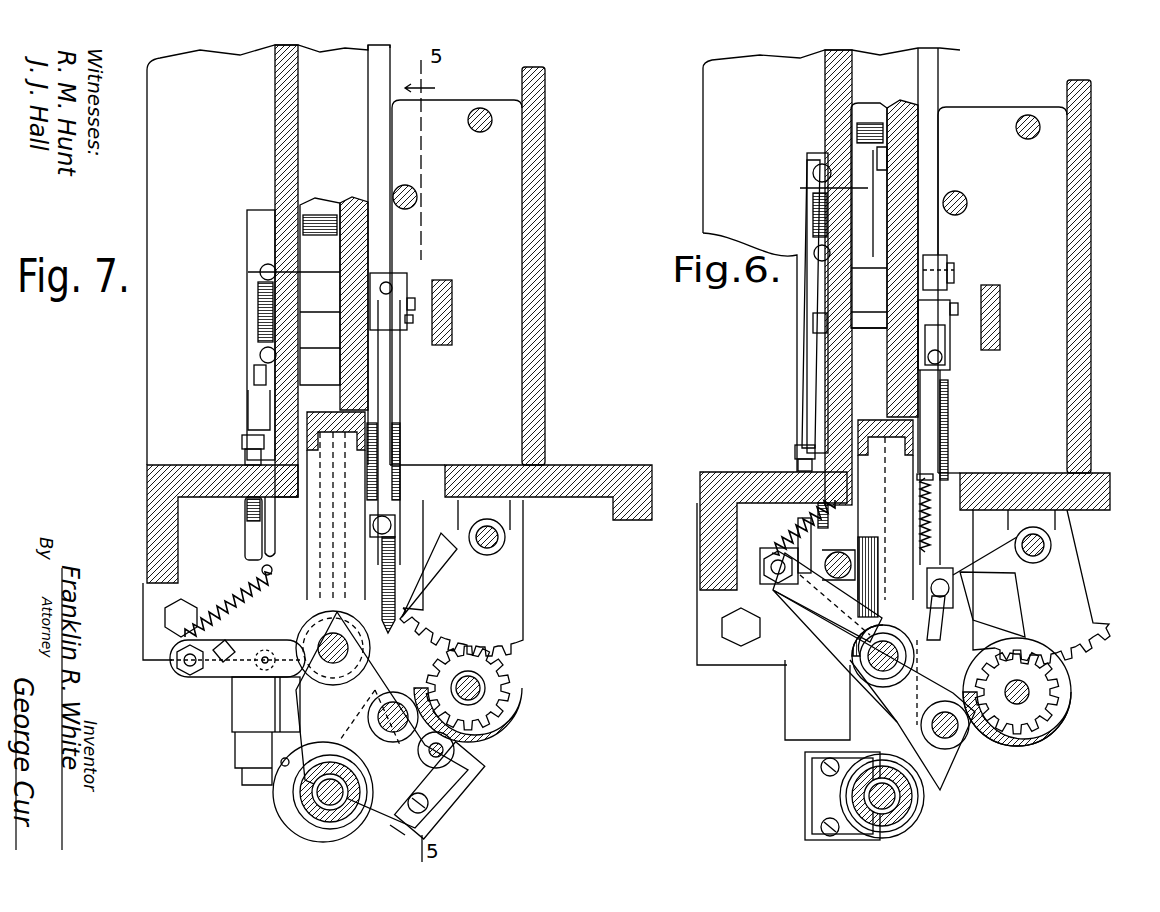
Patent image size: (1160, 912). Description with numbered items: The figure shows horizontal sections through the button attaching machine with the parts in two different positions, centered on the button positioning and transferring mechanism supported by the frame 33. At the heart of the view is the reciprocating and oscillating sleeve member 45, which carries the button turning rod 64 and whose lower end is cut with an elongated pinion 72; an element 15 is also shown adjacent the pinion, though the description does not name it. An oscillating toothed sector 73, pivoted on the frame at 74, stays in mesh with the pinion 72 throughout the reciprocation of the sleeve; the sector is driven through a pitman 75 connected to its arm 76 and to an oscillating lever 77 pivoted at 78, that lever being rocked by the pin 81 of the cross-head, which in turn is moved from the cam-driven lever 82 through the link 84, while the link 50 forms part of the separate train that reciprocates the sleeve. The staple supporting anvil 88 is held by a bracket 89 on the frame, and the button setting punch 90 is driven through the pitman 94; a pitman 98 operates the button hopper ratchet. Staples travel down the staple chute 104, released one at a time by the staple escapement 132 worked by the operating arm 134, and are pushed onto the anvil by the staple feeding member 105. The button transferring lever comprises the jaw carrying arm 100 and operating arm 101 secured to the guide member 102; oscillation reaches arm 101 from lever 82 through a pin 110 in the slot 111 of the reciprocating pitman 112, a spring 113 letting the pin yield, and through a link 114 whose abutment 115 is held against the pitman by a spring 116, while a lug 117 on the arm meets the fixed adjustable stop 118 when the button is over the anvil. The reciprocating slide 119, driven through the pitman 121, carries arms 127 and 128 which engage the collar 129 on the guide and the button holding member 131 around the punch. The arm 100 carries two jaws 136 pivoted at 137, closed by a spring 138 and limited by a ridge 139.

In FIG. 7, the gear shaft 15 is at (452, 676).
In FIG. 7, the frame 33 is at (532, 410).
In FIG. 6, the frame 33 is at (1085, 368).
In FIG. 6, the sleeve member 45 is at (1030, 692).
In FIG. 7, the link 50 is at (468, 120).
In FIG. 6, the link 50 is at (1016, 127).
In FIG. 7, the button turning rod 64 is at (510, 665).
In FIG. 6, the button turning rod 64 is at (1058, 672).
In FIG. 7, the elongated pinion 72 is at (518, 715).
In FIG. 6, the elongated pinion 72 is at (1072, 705).
In FIG. 7, the oscillating toothed sector 73 is at (480, 635).
In FIG. 6, the oscillating toothed sector 73 is at (1078, 615).
In FIG. 7, the pivot 74 is at (500, 537).
In FIG. 6, the pivot 74 is at (1050, 545).
In FIG. 7, the pitman 75 is at (418, 395).
In FIG. 6, the pitman 75 is at (942, 462).
In FIG. 7, the arm 76 is at (430, 533).
In FIG. 6, the arm 76 is at (995, 585).
In FIG. 6, the oscillating lever 77 is at (948, 338).
In FIG. 7, the pivot 78 is at (420, 298).
In FIG. 6, the pivot 78 is at (958, 310).
In FIG. 6, the pin 81 is at (954, 272).
In FIG. 7, the oscillating lever 82 is at (254, 375).
In FIG. 6, the oscillating lever 82 is at (815, 250).
In FIG. 7, the link 84 is at (258, 273).
In FIG. 6, the link 84 is at (821, 178).
In FIG. 7, the staple supporting anvil 88 is at (268, 232).
In FIG. 6, the staple supporting anvil 88 is at (806, 388).
In FIG. 7, the bracket 89 is at (285, 800).
In FIG. 6, the bracket 89 is at (885, 845).
In FIG. 7, the button setting punch 90 is at (336, 830).
In FIG. 6, the button setting punch 90 is at (852, 797).
In FIG. 7, the pitman 94 is at (462, 292).
In FIG. 6, the pitman 94 is at (1000, 305).
In FIG. 7, the pitman 98 is at (413, 319).
In FIG. 6, the jaw carrying arm 100 is at (860, 702).
In FIG. 7, the operating arm 101 is at (240, 668).
In FIG. 6, the operating arm 101 is at (838, 632).
In FIG. 7, the supporting and guide member 102 is at (318, 628).
In FIG. 6, the supporting and guide member 102 is at (850, 662).
In FIG. 7, the staple chute 104 is at (403, 448).
In FIG. 6, the staple chute 104 is at (935, 538).
In FIG. 7, the staple feeding member 105 is at (330, 705).
In FIG. 7, the pin 110 is at (260, 352).
In FIG. 7, the slot 111 is at (250, 396).
In FIG. 7, the reciprocating pitman 112 is at (256, 416).
In FIG. 6, the reciprocating pitman 112 is at (828, 520).
In FIG. 7, the spring 113 is at (258, 296).
In FIG. 6, the spring 113 is at (813, 208).
In FIG. 7, the link 114 is at (180, 628).
In FIG. 6, the link 114 is at (777, 590).
In FIG. 6, the stop or abutment 115 is at (840, 550).
In FIG. 7, the spring 116 is at (240, 592).
In FIG. 6, the spring 116 is at (792, 530).
In FIG. 7, the lug 117 is at (240, 630).
In FIG. 6, the lug 117 is at (795, 628).
In FIG. 7, the fixed adjustable stop 118 is at (248, 535).
In FIG. 6, the fixed adjustable stop 118 is at (798, 540).
In FIG. 7, the reciprocating slide 119 is at (380, 709).
In FIG. 6, the reciprocating slide 119 is at (948, 690).
In FIG. 7, the pitman 121 is at (417, 193).
In FIG. 6, the pitman 121 is at (967, 199).
In FIG. 7, the arm 127 is at (322, 680).
In FIG. 6, the arm 127 is at (942, 632).
In FIG. 7, the arm 128 is at (310, 735).
In FIG. 6, the arm 128 is at (925, 785).
In FIG. 7, the collar 129 is at (282, 680).
In FIG. 6, the collar 129 is at (862, 618).
In FIG. 7, the button holding member 131 is at (305, 815).
In FIG. 6, the button holding member 131 is at (912, 815).
In FIG. 7, the staple escapement 132 is at (318, 555).
In FIG. 6, the staple escapement 132 is at (858, 600).
In FIG. 7, the operating arm 134 is at (410, 570).
In FIG. 6, the operating arm 134 is at (948, 440).
In FIG. 7, the jaws 136 is at (470, 770).
In FIG. 7, the pivot 137 is at (432, 815).
In FIG. 6, the pivot 137 is at (812, 840).
In FIG. 7, the spring 138 is at (455, 790).
In FIG. 6, the spring 138 is at (812, 828).
In FIG. 7, the ridge 139 is at (392, 830).
In FIG. 6, the ridge 139 is at (812, 812).